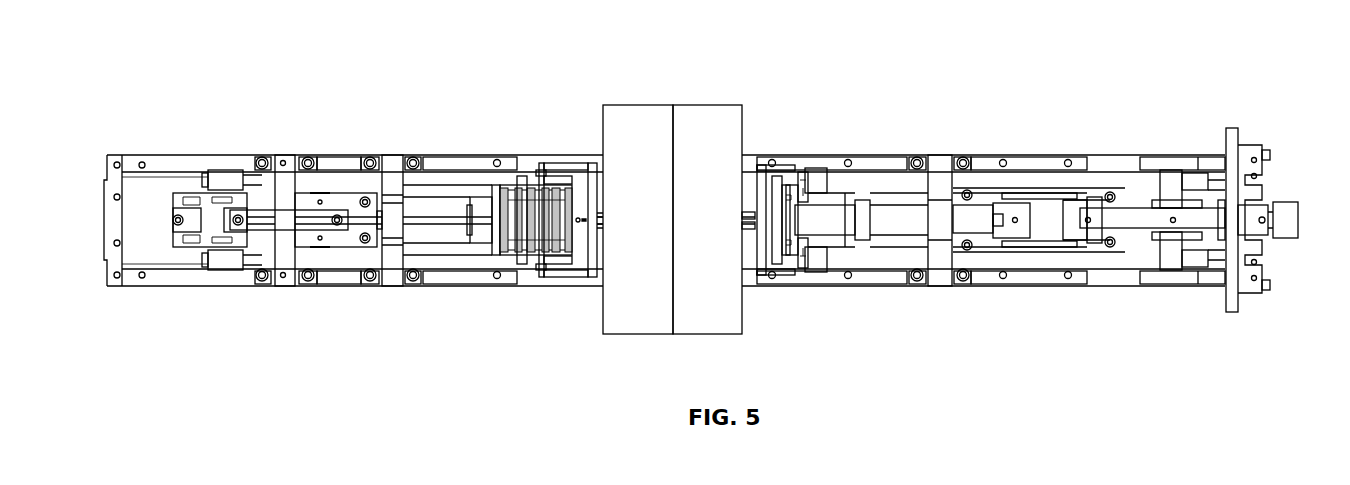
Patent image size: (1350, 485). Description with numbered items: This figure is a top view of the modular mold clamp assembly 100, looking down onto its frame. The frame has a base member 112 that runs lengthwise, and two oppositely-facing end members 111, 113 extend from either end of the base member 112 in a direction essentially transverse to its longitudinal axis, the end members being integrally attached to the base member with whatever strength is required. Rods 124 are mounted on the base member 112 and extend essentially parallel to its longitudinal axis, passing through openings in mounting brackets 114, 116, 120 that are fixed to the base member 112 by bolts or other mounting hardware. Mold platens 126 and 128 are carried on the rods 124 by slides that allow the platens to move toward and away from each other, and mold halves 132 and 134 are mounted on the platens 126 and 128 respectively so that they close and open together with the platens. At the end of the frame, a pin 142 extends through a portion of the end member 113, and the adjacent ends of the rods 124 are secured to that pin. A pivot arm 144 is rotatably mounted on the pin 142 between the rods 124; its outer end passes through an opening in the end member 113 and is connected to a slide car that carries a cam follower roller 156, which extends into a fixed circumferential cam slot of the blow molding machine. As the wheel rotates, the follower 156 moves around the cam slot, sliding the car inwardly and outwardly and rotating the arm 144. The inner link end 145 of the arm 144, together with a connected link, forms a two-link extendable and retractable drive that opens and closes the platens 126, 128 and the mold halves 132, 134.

The modular mold clamp assembly 100 is at (212, 58).
The end member 111 is at (110, 280).
The base member 112 is at (885, 160).
The end member 113 is at (1240, 303).
The mounting bracket 114 is at (290, 155).
The mounting bracket 116 is at (392, 288).
The mounting bracket 120 is at (982, 175).
The rods 124 is at (457, 178).
The mold platen 126 is at (750, 160).
The mold platen 128 is at (598, 160).
The mold half 132 is at (710, 113).
The mold half 134 is at (628, 113).
The pin 142 is at (1170, 172).
The pivot arm 144 is at (1133, 222).
The inner link end 145 is at (1072, 225).
The cam follower roller 156 is at (1300, 218).